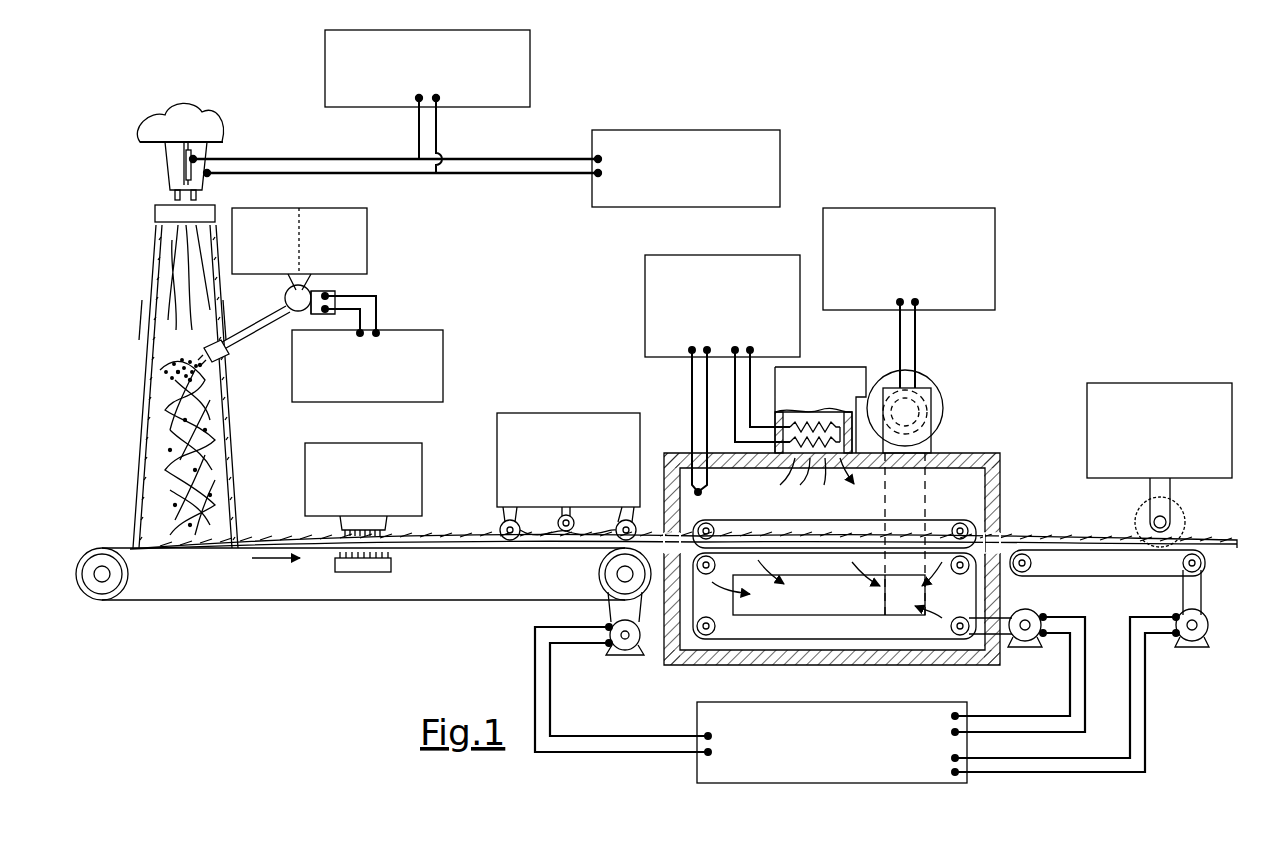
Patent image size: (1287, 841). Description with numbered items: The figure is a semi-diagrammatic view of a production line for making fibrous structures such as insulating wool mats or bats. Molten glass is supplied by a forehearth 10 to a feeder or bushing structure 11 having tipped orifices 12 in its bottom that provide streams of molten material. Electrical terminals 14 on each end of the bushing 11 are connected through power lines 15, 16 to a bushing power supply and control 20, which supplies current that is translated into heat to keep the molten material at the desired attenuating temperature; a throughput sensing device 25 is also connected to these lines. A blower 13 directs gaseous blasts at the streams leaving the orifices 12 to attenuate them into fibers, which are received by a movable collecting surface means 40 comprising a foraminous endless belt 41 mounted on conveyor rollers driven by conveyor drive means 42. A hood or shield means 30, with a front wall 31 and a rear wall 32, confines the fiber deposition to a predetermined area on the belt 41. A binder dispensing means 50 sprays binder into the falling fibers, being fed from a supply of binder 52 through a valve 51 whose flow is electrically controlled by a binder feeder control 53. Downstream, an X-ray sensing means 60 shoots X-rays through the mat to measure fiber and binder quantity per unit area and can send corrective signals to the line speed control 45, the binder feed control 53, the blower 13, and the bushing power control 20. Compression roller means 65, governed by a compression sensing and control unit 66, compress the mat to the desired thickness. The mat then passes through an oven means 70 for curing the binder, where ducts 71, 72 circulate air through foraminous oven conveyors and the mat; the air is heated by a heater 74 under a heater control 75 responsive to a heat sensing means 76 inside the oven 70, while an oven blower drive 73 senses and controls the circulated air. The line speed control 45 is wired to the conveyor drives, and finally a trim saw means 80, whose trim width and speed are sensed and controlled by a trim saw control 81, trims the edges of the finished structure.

The forehearth 10 is at (180, 130).
The feeder or bushing structure 11 is at (178, 172).
The tipped orifices 12 is at (176, 196).
The blower 13 is at (155, 214).
The electrical terminals 14 is at (185, 158).
The power line 15 is at (378, 157).
The power line 16 is at (372, 177).
The bushing power supply and control 20 is at (512, 29).
The throughput sensing device 25 is at (720, 129).
The hood or shield means 30 is at (150, 308).
The front wall 31 is at (228, 420).
The rear wall 32 is at (140, 410).
The movable collecting surface means 40 is at (118, 546).
The endless belt 41 is at (165, 553).
The conveyor drive means 42 is at (612, 651).
The line speed control 45 is at (866, 702).
The binder dispensing means 50 is at (223, 350).
The valve 51 is at (285, 294).
The supply of binder 52 is at (332, 208).
The binder feeder control 53 is at (397, 330).
The X-ray sensing means 60 is at (390, 443).
The compression roller means 65 is at (558, 535).
The compression sensing and control unit 66 is at (596, 413).
The oven means 70 is at (676, 667).
The duct 71 is at (935, 382).
The duct 72 is at (827, 589).
The oven blower drive 73 is at (936, 208).
The heater 74 is at (808, 412).
The heater control 75 is at (742, 255).
The heat sensing means 76 is at (700, 492).
The trim saw means 80 is at (1140, 516).
The trim saw control 81 is at (1186, 383).